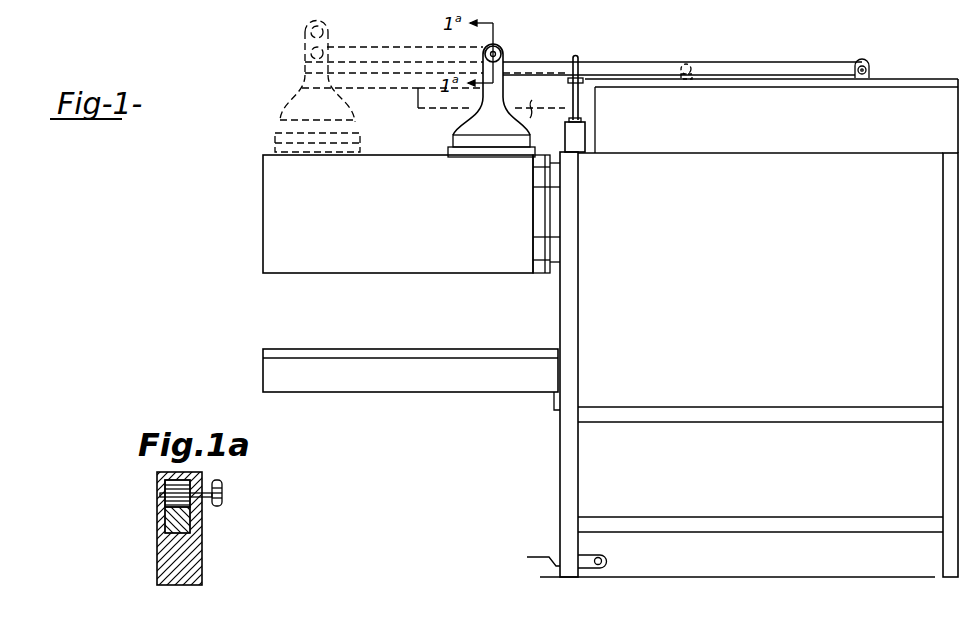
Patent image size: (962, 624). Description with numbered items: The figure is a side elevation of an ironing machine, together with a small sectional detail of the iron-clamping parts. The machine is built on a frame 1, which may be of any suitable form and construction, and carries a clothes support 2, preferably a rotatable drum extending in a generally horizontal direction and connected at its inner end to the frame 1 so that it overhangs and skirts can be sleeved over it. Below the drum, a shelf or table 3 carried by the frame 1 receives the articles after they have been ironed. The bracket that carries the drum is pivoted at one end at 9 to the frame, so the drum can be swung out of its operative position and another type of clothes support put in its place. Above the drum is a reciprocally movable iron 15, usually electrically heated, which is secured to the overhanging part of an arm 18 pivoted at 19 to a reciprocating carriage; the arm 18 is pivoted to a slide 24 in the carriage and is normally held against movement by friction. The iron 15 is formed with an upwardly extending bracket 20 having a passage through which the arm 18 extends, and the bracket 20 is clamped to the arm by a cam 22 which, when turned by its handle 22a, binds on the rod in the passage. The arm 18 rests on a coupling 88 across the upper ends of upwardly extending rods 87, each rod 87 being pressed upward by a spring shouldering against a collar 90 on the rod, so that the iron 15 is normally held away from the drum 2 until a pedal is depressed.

In FIG. 1, the frame 1 is at (562, 302).
In FIG. 1, the clothes support 2 is at (398, 214).
In FIG. 1, the shelf or table 3 is at (381, 386).
In FIG. 1, the pivot 9 is at (545, 274).
In FIG. 1, the iron 15 is at (463, 118).
In FIG. 1, the arm 18 is at (654, 66).
In FIG. 1A, the arm 18 is at (200, 520).
In FIG. 1, the pivot 19 is at (870, 64).
In FIG. 1, the bracket 20 is at (500, 68).
In FIG. 1A, the bracket 20 is at (157, 517).
In FIG. 1A, the cam 22 is at (160, 495).
In FIG. 1A, the handle 22a is at (222, 490).
In FIG. 1, the slide 24 is at (418, 93).
In FIG. 1, the rod 87 is at (576, 55).
In FIG. 1, the coupling 88 is at (584, 82).
In FIG. 1, the collar 90 is at (586, 120).